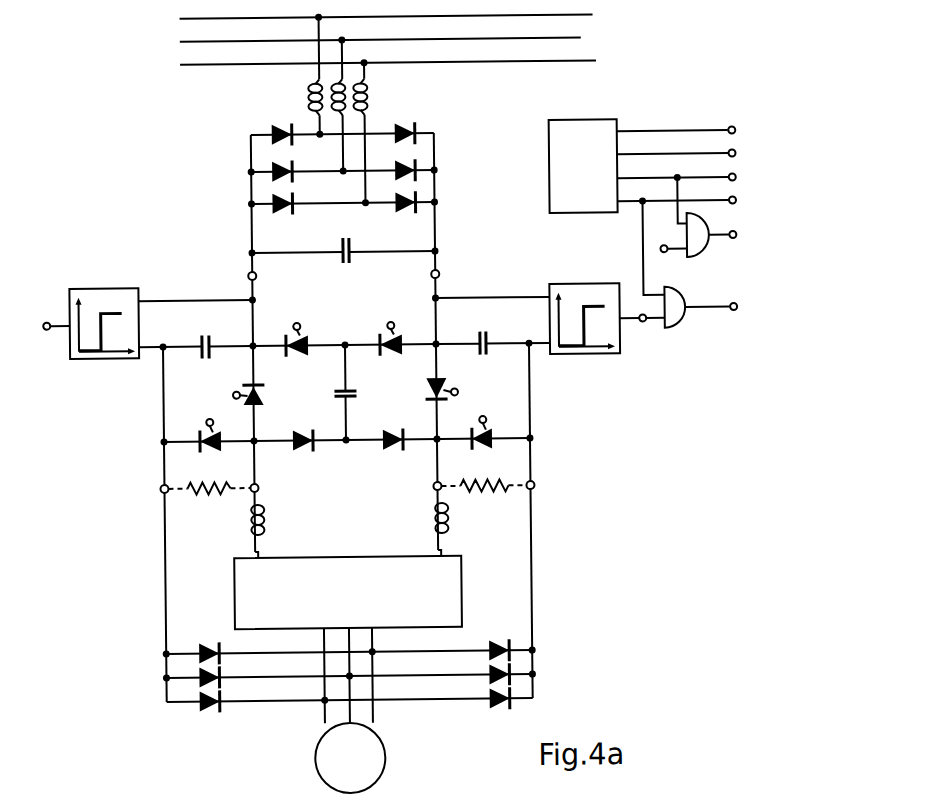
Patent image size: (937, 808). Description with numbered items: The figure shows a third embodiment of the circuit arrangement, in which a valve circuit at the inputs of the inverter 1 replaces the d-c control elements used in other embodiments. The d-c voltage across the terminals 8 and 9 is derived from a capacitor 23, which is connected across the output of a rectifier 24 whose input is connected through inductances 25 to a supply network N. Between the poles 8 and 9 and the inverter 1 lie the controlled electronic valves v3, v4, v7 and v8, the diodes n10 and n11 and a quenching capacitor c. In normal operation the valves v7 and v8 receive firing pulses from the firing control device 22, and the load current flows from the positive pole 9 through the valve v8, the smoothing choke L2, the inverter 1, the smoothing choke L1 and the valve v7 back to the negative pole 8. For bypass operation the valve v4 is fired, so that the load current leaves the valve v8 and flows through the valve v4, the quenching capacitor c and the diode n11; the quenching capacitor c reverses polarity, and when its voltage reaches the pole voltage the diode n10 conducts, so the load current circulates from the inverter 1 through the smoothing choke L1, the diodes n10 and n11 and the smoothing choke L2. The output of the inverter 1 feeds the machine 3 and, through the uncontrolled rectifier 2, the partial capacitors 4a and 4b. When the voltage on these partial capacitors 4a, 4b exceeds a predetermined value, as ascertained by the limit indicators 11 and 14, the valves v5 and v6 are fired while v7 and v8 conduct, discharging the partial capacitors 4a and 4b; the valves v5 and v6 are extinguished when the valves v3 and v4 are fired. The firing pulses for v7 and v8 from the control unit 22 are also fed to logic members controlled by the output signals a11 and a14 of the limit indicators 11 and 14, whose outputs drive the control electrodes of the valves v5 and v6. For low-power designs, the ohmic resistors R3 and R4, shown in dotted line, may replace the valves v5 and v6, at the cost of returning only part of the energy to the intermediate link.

The supply network N is at (592, 55).
The inductances 25 is at (373, 98).
The rectifier 24 is at (415, 190).
The capacitor 23 is at (342, 262).
The negative pole 8 is at (250, 276).
The positive pole 9 is at (441, 276).
The limit indicator 11 is at (105, 287).
The limit indicator 14 is at (582, 357).
The output signal a11 is at (46, 321).
The output signal a14 is at (645, 326).
The partial capacitor 4a is at (202, 358).
The partial capacitor 4b is at (486, 357).
The controlled electronic valve v3 is at (309, 352).
The controlled electronic valve v4 is at (403, 352).
The controlled electronic valve v5 is at (222, 447).
The controlled electronic valve v6 is at (494, 447).
The controlled electronic valve v7 is at (262, 404).
The controlled electronic valve v8 is at (427, 401).
The diode n10 is at (300, 452).
The diode n11 is at (390, 452).
The quenching capacitor c is at (352, 398).
The ohmic resistor R3 is at (214, 494).
The ohmic resistor R4 is at (492, 494).
The smoothing choke L1 is at (264, 520).
The smoothing choke L2 is at (432, 518).
The inverter 1 is at (355, 608).
The rectifier 2 is at (231, 687).
The machine 3 is at (382, 752).
The firing control device 22 is at (599, 181).